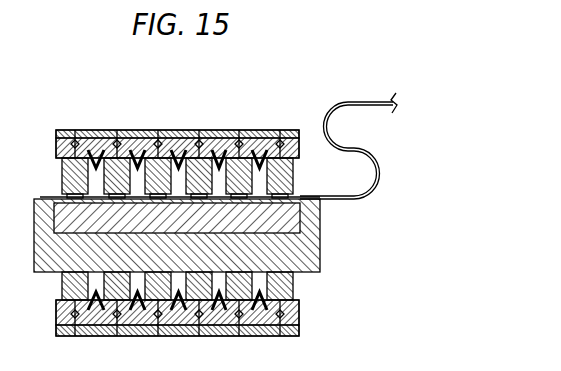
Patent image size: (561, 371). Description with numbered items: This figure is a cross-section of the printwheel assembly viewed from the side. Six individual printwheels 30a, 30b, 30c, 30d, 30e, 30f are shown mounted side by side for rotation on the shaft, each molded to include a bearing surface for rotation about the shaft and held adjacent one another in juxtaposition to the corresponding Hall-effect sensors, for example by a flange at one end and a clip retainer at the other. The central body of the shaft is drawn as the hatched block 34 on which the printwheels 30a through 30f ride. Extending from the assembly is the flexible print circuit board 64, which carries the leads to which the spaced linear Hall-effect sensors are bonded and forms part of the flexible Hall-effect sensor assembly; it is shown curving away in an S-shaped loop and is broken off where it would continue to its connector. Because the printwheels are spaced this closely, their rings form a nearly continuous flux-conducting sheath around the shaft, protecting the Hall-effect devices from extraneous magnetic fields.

The printwheel 30a is at (75, 124).
The printwheel 30b is at (118, 124).
The printwheel 30c is at (160, 124).
The printwheel 30d is at (198, 124).
The printwheel 30e is at (240, 124).
The printwheel 30f is at (282, 124).
The substrate block 34 is at (320, 257).
The flexible print circuit board 64 is at (342, 201).